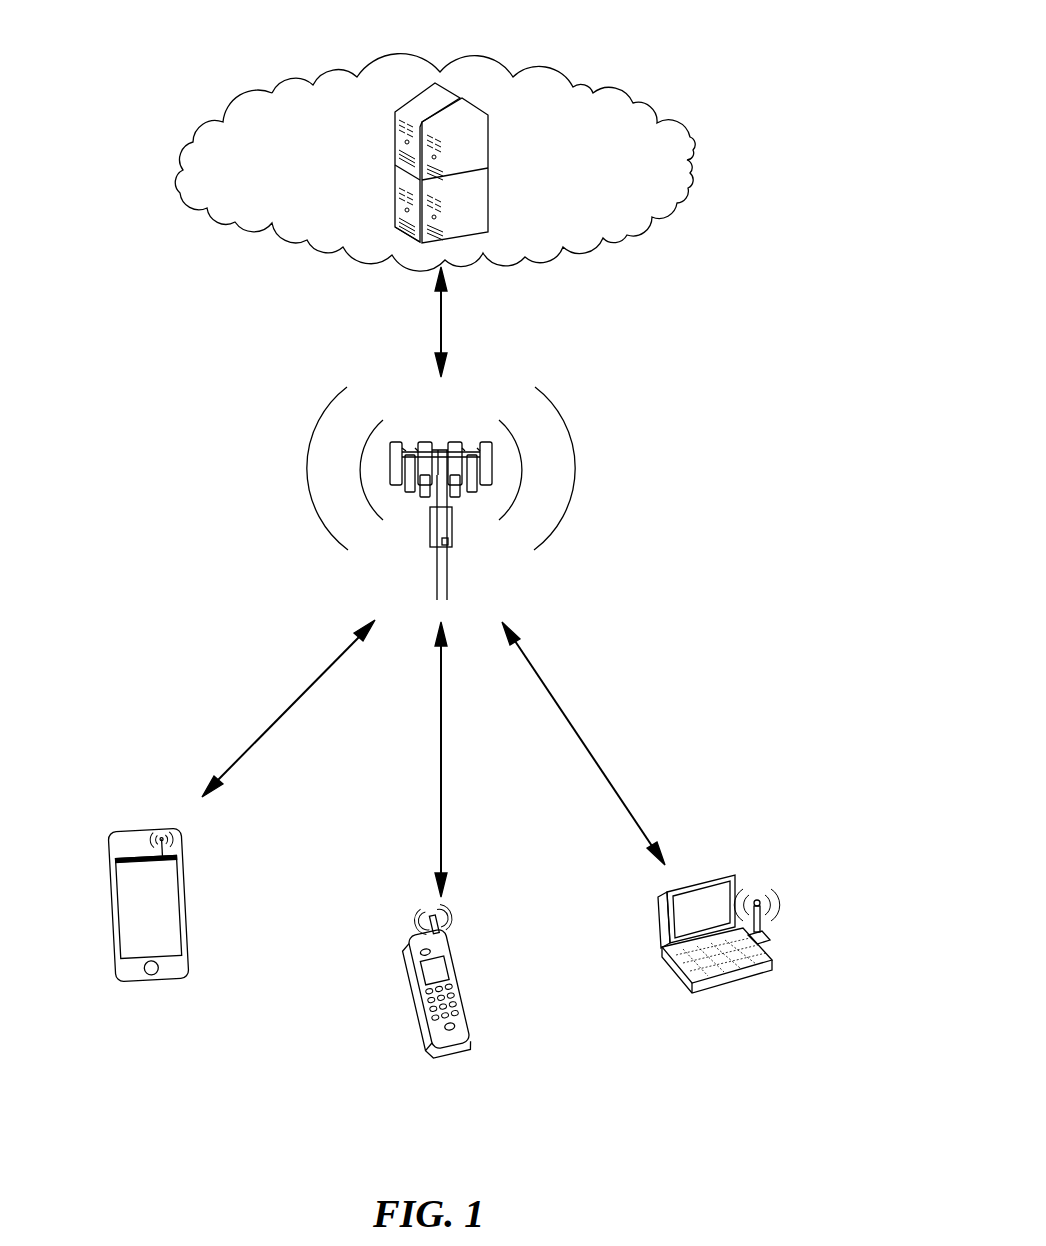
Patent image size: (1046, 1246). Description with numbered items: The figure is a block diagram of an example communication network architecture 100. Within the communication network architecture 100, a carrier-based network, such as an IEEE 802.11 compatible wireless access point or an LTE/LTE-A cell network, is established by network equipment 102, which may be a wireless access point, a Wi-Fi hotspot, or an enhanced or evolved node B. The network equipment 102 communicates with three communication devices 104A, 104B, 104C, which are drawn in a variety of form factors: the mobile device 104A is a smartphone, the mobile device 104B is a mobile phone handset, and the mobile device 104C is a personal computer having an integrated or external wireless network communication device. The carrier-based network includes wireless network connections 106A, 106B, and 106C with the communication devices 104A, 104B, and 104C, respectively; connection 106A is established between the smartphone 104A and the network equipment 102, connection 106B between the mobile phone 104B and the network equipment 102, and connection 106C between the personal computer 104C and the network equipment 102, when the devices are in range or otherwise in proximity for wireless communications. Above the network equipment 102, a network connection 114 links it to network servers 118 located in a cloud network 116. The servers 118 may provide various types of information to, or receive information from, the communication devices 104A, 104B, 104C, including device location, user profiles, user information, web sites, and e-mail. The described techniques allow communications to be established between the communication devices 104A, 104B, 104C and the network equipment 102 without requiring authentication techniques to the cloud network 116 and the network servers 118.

The communication network architecture 100 is at (122, 44).
The network equipment 102 is at (452, 523).
The communication device 104A is at (190, 965).
The communication device 104B is at (458, 1056).
The communication device 104C is at (703, 981).
The wireless network connection 106A is at (258, 743).
The wireless network connection 106B is at (443, 785).
The wireless network connection 106C is at (604, 772).
The network connection 114 is at (443, 305).
The cloud network 116 is at (645, 103).
The network servers 118 is at (488, 137).